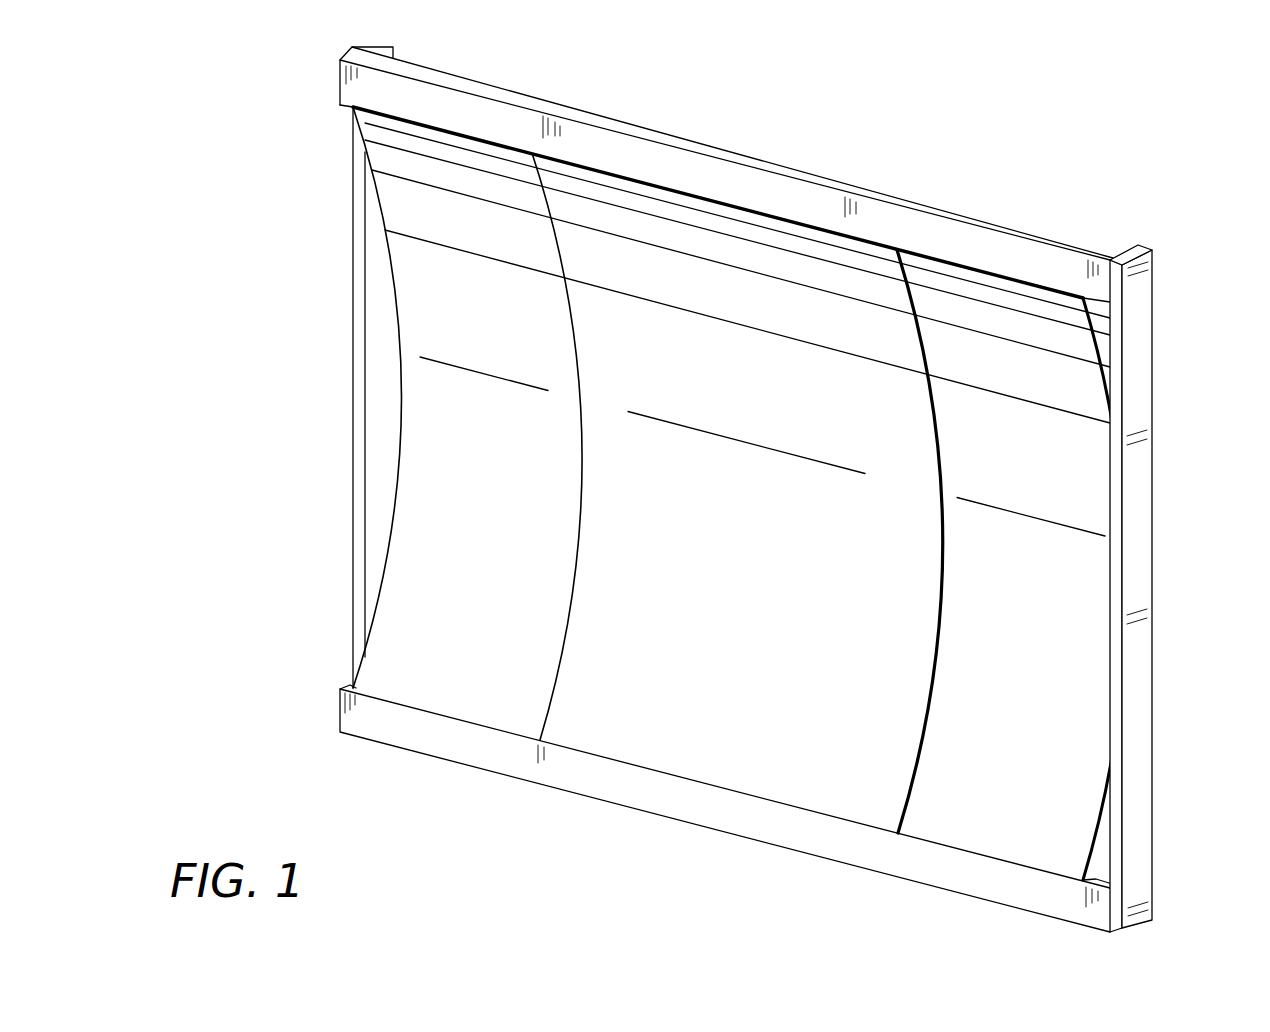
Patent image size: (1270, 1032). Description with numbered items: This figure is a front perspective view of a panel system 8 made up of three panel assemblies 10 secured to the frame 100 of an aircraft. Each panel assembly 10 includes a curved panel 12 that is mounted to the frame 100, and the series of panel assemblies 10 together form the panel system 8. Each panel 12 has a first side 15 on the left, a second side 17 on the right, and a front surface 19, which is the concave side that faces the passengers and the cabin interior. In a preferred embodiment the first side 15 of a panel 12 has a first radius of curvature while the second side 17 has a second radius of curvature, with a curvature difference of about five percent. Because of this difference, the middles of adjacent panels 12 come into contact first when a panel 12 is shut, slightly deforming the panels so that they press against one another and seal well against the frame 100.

The panel system 8 is at (262, 172).
The panel assembly 10 is at (449, 113).
The panel 12 is at (756, 256).
The first side 15 is at (580, 500).
The second side 17 is at (946, 600).
The front surface 19 is at (752, 652).
The frame 100 is at (1068, 266).